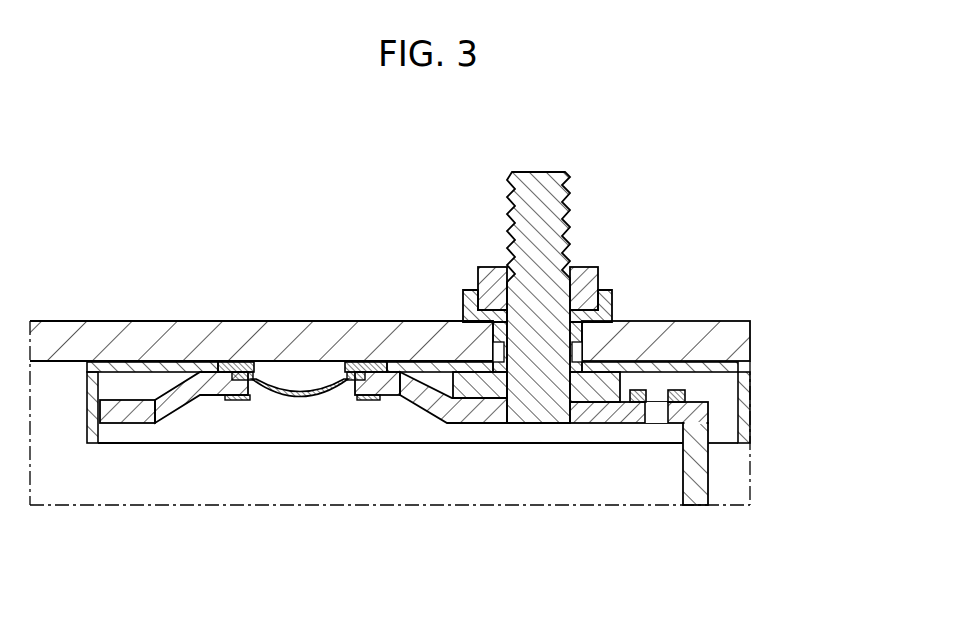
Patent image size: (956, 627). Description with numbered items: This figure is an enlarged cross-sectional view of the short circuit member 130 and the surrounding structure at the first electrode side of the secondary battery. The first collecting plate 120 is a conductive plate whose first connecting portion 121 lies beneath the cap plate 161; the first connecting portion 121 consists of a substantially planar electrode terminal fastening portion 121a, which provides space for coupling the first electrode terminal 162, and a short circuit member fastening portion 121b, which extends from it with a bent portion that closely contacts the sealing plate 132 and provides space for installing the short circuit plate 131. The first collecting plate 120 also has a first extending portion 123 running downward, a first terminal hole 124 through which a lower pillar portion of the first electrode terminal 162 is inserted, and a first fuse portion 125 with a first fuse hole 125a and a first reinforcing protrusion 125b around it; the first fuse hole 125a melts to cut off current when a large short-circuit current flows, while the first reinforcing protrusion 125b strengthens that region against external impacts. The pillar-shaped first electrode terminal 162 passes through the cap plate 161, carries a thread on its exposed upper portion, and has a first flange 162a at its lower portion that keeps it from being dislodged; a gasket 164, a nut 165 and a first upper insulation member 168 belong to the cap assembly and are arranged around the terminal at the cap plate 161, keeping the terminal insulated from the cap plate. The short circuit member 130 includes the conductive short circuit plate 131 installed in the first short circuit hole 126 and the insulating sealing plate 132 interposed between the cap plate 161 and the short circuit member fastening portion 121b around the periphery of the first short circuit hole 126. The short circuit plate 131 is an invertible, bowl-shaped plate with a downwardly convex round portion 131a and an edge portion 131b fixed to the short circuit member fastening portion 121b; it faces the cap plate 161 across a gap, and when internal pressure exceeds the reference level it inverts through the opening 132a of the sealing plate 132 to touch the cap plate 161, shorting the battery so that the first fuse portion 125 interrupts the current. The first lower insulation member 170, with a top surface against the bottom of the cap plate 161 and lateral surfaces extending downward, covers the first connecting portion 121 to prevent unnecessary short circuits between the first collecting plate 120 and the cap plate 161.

The first collecting plate 120 is at (705, 392).
The first connecting portion 121 is at (303, 487).
The electrode terminal fastening portion 121a is at (482, 413).
The short circuit member fastening portion 121b is at (384, 387).
The first extending portion 123 is at (690, 482).
The first terminal hole 124 is at (548, 412).
The first fuse portion 125 is at (672, 318).
The first fuse hole 125a is at (658, 407).
The first reinforcing protrusion 125b is at (680, 392).
The first short circuit hole 126 is at (252, 376).
The short circuit member 130 is at (288, 373).
The short circuit plate 131 is at (299, 393).
The round portion 131a is at (290, 415).
The edge portion 131b is at (360, 378).
The sealing plate 132 is at (288, 295).
The opening 132a is at (262, 366).
The cap plate 161 is at (80, 328).
The first electrode terminal 162 is at (541, 172).
The first flange 162a is at (612, 385).
The gasket 164 is at (492, 348).
The nut 165 is at (582, 268).
The first upper insulation member 168 is at (470, 292).
The first lower insulation member 170 is at (181, 433).